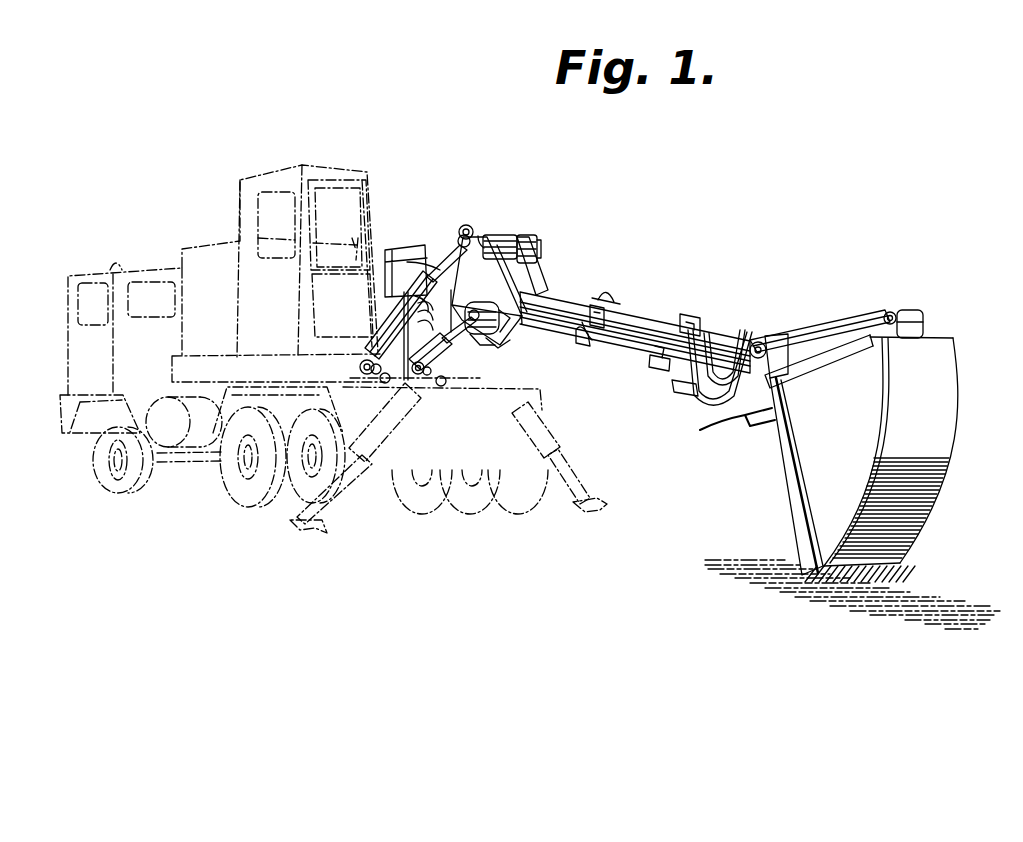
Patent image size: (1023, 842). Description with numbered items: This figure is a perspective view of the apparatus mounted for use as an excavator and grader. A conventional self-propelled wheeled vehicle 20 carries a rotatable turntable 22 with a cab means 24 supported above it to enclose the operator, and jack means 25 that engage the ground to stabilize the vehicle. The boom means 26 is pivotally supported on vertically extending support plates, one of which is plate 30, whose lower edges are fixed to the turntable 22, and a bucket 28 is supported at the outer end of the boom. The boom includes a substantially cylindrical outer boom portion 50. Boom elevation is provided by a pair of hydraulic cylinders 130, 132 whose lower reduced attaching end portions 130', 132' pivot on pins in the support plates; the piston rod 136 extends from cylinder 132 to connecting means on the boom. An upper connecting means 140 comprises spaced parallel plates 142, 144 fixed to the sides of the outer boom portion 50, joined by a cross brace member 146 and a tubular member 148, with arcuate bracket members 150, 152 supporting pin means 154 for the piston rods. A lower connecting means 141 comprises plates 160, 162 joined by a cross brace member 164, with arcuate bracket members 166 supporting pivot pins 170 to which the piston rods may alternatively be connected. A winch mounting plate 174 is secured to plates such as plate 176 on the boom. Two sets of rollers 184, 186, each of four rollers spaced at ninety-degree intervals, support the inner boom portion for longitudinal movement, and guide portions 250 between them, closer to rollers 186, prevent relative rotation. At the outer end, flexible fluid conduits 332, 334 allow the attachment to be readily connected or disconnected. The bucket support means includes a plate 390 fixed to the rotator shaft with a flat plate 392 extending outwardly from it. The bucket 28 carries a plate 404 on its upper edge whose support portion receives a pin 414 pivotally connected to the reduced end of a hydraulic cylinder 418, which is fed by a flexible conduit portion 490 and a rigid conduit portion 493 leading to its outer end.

The self-propelled wheeled vehicle 20 is at (64, 345).
The rotatable turntable 22 is at (170, 372).
The cab means 24 is at (346, 170).
The jack means 25 is at (292, 528).
The boom means 26 is at (578, 306).
The bucket 28 is at (958, 352).
The support plate 30 is at (418, 312).
The outer boom portion 50 is at (632, 320).
The hydraulic cylinder 130 is at (446, 367).
The lower reduced attaching end portion 130' is at (436, 402).
The hydraulic cylinder 132 is at (353, 341).
The lower reduced attaching end portion 132' is at (373, 391).
The piston rod 136 is at (446, 258).
The upper connecting means 140 is at (536, 272).
The lower connecting means 141 is at (587, 328).
The plate 142 is at (490, 234).
The plate 144 is at (526, 236).
The cross brace member 146 is at (522, 284).
The tubular member 148 is at (510, 236).
The arcuate bracket member 150 is at (464, 248).
The arcuate bracket member 152 is at (540, 246).
The pin means 154 is at (465, 232).
The plate 160 is at (505, 335).
The plate 162 is at (520, 326).
The cross brace member 164 is at (488, 344).
The arcuate bracket member 166 is at (476, 336).
The pivot pin 170 is at (442, 338).
The winch mounting plate 174 is at (407, 262).
The plate 176 is at (415, 296).
The set of rollers 184 is at (610, 294).
The set of rollers 186 is at (692, 318).
The guide portions 250 is at (661, 364).
The flexible fluid conduit 332 is at (746, 335).
The flexible fluid conduit 334 is at (708, 332).
The plate 390 is at (762, 344).
The flat plate 392 is at (781, 403).
The plate 404 is at (808, 358).
The pin 414 is at (900, 313).
The hydraulic cylinder 418 is at (820, 330).
The flexible conduit portion 490 is at (740, 408).
The rigid conduit portion 493 is at (868, 316).